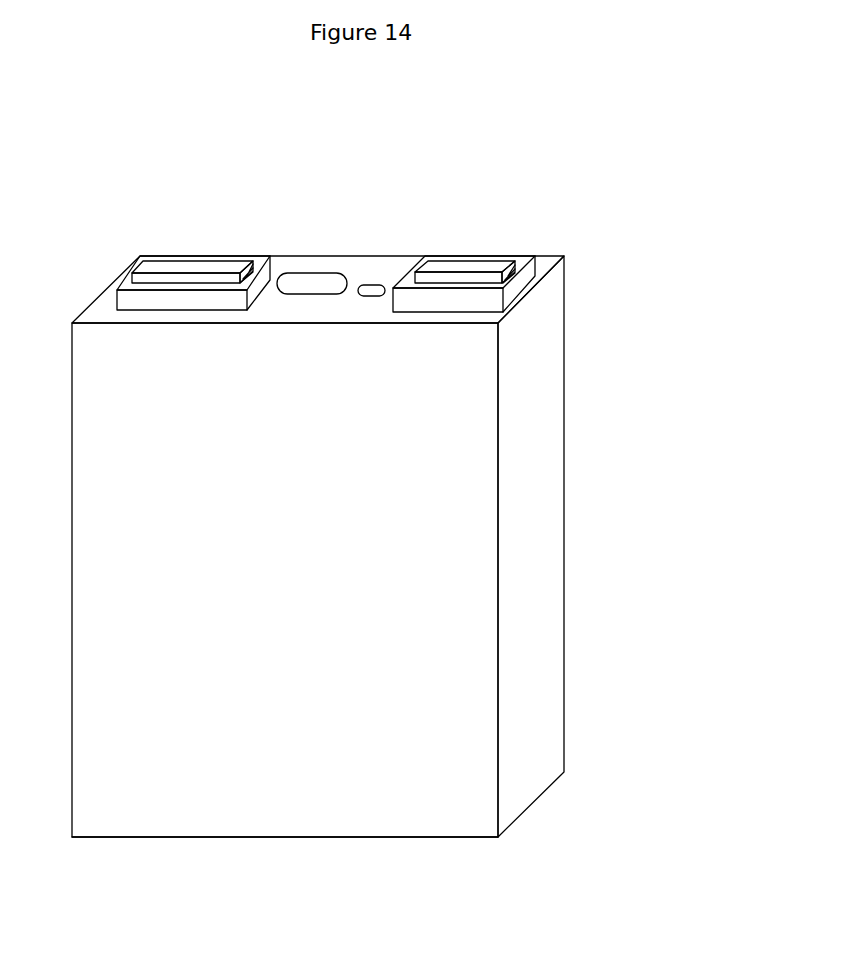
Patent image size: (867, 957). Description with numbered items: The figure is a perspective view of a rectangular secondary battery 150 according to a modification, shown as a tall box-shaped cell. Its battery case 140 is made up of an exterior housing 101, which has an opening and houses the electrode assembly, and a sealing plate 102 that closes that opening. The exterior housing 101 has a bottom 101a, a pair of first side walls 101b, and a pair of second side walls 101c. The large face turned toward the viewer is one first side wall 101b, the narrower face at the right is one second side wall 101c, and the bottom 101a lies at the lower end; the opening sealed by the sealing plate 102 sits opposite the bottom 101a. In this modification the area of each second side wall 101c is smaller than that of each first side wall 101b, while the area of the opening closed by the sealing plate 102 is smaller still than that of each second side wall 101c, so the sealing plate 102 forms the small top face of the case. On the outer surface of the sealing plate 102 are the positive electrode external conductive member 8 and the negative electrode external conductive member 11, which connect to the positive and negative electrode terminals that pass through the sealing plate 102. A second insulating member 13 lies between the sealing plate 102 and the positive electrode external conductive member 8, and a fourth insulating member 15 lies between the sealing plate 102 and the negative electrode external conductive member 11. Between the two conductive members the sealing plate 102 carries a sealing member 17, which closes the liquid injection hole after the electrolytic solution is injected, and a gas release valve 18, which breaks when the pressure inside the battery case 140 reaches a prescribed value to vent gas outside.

The rectangular secondary battery 150 is at (93, 131).
The battery case 140 is at (716, 290).
The exterior housing 101 is at (537, 402).
The sealing plate 102 is at (472, 315).
The bottom 101a is at (353, 837).
The first side wall 101b is at (173, 752).
The second side wall 101c is at (520, 652).
The negative electrode external conductive member 11 is at (183, 270).
The positive electrode external conductive member 8 is at (477, 268).
The second insulating member 13 is at (482, 303).
The fourth insulating member 15 is at (148, 300).
The sealing member 17 is at (368, 287).
The gas release valve 18 is at (313, 285).